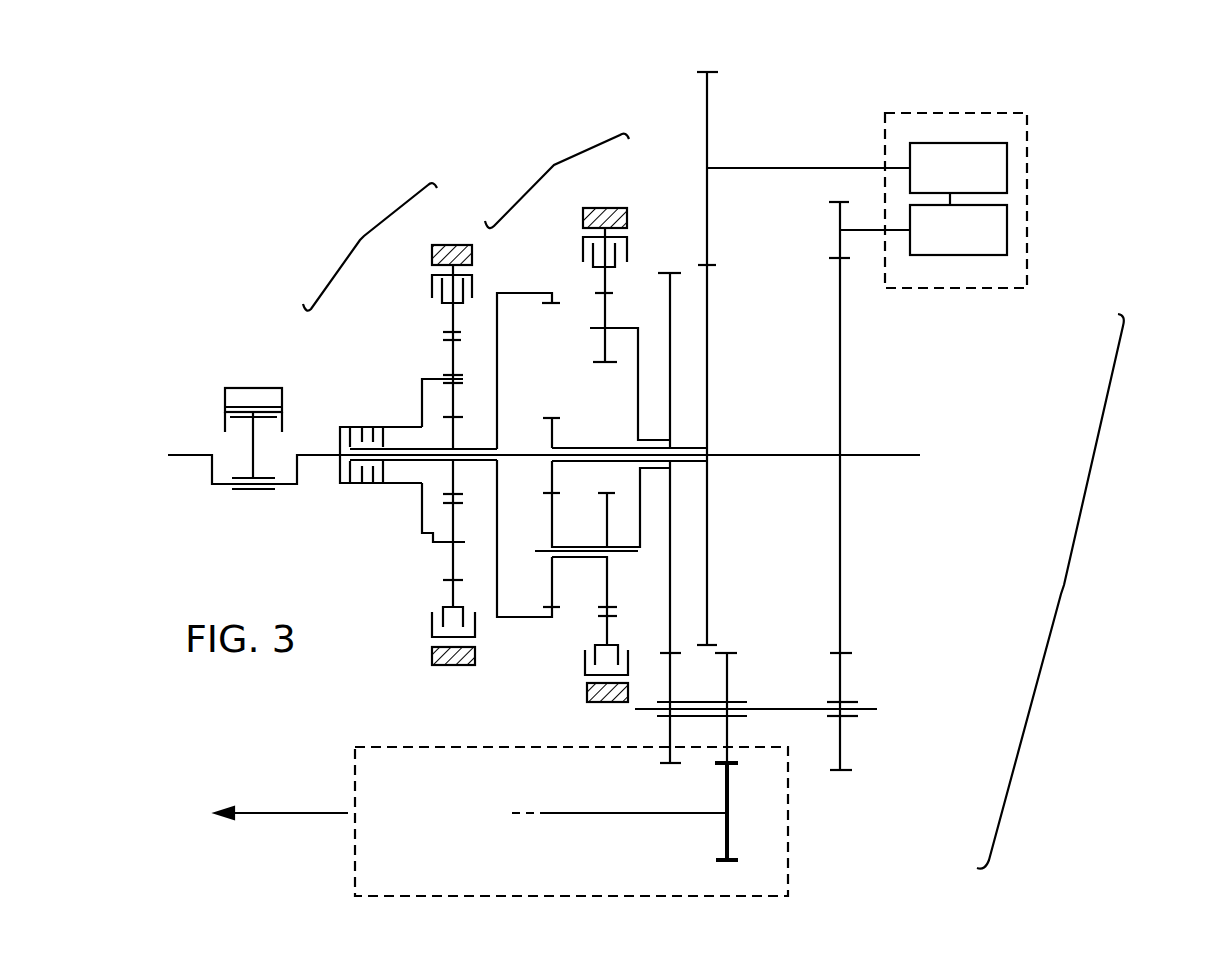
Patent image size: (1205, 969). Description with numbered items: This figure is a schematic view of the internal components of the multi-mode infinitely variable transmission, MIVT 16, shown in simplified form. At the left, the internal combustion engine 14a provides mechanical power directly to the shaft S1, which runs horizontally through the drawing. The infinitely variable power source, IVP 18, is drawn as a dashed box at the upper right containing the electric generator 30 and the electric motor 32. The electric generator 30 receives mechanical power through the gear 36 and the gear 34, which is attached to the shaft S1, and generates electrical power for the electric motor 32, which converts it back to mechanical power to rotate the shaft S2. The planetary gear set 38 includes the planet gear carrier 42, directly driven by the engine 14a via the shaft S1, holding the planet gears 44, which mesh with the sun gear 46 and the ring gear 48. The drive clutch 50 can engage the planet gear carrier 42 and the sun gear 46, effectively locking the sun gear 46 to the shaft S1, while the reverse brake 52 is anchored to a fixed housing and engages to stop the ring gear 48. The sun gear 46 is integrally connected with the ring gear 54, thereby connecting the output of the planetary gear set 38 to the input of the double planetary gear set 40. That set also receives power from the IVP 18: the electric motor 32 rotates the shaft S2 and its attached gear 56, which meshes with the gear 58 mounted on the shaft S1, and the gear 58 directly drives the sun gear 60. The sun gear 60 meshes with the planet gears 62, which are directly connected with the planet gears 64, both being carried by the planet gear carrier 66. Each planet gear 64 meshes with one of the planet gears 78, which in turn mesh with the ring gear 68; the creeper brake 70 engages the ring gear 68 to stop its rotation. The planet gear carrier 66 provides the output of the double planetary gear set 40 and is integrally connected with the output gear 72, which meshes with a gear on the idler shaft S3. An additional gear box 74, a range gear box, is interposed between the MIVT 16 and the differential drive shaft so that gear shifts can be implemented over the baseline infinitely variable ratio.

The internal combustion engine 14a is at (253, 388).
The MIVT 16 is at (1068, 595).
The IVP 18 is at (983, 113).
The electric generator 30 is at (1005, 230).
The electric motor 32 is at (1005, 163).
The gear 34 is at (823, 270).
The gear 36 is at (862, 473).
The planetary gear set 38 is at (360, 238).
The double planetary gear set 40 is at (552, 167).
The planet gear carrier 42 is at (420, 393).
The planet gears 44 is at (453, 436).
The sun gear 46 is at (423, 460).
The ring gear 48 is at (442, 322).
The drive clutch 50 is at (381, 440).
The reverse brake 52 is at (437, 274).
The ring gear 54 is at (528, 455).
The gear 56 is at (707, 346).
The gear 58 is at (722, 278).
The sun gear 60 is at (620, 426).
The planet gears 62 is at (597, 506).
The planet gears 64 is at (584, 569).
The planet gear carrier 66 is at (635, 360).
The ring gear 68 is at (590, 278).
The creeper brake 70 is at (619, 237).
The output gear 72 is at (660, 612).
The additional gear box 74 is at (385, 745).
The planet gears 78 is at (597, 332).
The shaft S1 is at (565, 463).
The shaft S2 is at (786, 170).
The idler shaft S3 is at (779, 708).